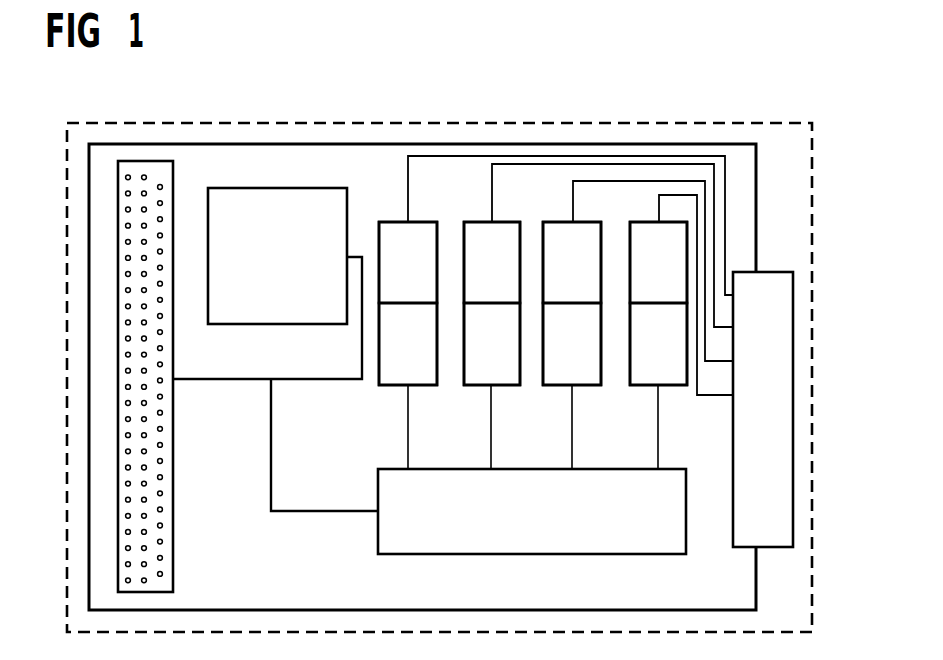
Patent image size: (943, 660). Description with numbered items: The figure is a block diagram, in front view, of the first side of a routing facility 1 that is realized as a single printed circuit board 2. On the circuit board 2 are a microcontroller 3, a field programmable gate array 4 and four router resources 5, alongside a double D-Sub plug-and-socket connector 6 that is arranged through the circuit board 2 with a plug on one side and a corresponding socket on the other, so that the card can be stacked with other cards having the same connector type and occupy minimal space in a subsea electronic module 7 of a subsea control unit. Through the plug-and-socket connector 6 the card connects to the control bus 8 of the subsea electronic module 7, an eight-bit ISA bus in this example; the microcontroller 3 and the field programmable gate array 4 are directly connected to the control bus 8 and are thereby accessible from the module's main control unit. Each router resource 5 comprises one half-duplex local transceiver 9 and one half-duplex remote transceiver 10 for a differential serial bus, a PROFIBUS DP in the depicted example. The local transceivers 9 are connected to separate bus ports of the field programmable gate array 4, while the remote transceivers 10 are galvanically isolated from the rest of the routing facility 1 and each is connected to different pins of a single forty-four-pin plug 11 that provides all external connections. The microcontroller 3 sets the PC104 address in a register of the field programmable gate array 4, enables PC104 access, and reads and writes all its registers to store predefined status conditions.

The routing facility 1 is at (258, 144).
The printed circuit board 2 is at (189, 165).
The microcontroller 3 is at (318, 188).
The field programmable gate array 4 is at (405, 556).
The router resource 5 is at (476, 222).
The plug-and-socket connector 6 is at (118, 343).
The subsea electronic module 7 is at (392, 123).
The control bus 8 is at (271, 488).
The local transceiver 9 is at (669, 364).
The remote transceiver 10 is at (671, 284).
The plug 11 is at (793, 288).